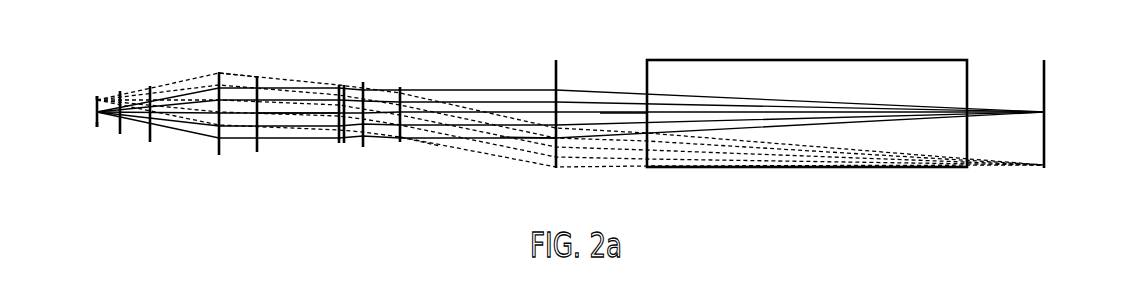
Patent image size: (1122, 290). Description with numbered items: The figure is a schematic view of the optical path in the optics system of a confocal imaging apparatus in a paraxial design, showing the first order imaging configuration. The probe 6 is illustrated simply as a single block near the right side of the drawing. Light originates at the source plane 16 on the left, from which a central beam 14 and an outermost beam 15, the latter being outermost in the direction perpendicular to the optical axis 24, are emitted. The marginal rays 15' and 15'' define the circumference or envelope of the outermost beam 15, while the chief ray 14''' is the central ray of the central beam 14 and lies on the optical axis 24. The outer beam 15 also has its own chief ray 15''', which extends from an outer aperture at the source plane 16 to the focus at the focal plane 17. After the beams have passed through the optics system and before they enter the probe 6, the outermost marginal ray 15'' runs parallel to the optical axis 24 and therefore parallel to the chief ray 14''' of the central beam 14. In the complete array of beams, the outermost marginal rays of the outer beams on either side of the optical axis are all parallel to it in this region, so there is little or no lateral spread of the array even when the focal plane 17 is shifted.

The probe 6 is at (698, 59).
The central beam 14 is at (107, 156).
The chief ray of central beam 14''' is at (298, 157).
The outermost beam 15 is at (105, 66).
The marginal ray of outermost beam 15' is at (209, 55).
The outermost marginal ray 15'' is at (419, 169).
The chief ray of outer beam 15''' is at (468, 189).
The source plane 16 is at (95, 103).
The focal plane 17 is at (1047, 73).
The optical axis 24 is at (625, 113).